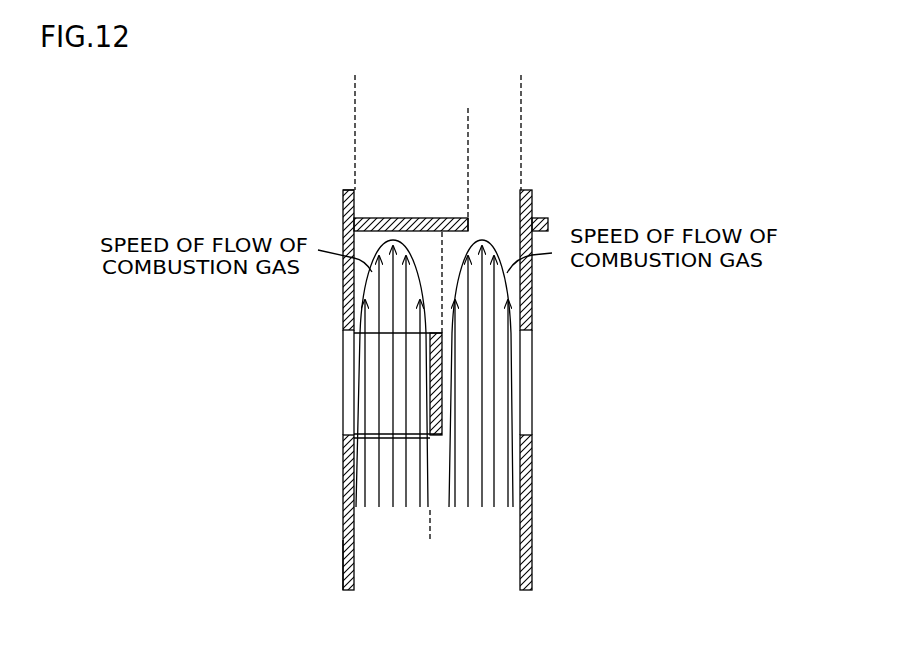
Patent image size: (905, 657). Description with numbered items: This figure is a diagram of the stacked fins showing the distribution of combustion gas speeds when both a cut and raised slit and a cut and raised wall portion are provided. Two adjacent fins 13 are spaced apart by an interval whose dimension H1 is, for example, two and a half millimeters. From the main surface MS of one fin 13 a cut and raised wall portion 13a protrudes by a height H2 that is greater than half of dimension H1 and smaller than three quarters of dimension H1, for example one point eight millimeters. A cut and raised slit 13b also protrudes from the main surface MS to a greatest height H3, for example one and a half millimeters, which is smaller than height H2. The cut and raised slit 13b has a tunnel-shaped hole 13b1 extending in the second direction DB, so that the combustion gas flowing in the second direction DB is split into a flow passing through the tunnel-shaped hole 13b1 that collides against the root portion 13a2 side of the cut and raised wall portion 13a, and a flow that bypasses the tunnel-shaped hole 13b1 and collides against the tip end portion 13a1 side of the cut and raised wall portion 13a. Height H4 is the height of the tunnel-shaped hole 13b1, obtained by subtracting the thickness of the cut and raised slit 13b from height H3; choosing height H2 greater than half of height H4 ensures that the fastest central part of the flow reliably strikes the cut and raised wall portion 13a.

The fin 13 is at (343, 295).
The cut and raised wall portion 13a is at (410, 217).
The tip end portion 13a1 is at (468, 226).
The root portion 13a2 is at (343, 207).
The cut and raised slit 13b is at (431, 508).
The tunnel-shaped hole 13b1 is at (396, 443).
The dimension of interval between adjacent fins H1 is at (520, 90).
The height of protrusion of cut and raised wall portion H2 is at (467, 120).
The greatest height of protrusion of cut and raised slit H3 is at (441, 236).
The height of tunnel-shaped hole H4 is at (430, 527).
The second direction DB is at (281, 330).
The main surface of fin MS is at (354, 545).